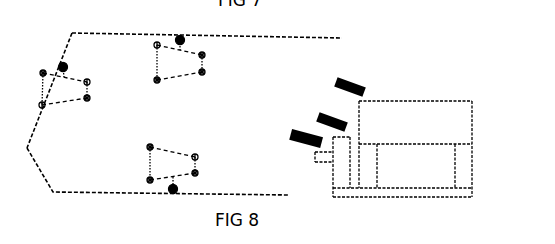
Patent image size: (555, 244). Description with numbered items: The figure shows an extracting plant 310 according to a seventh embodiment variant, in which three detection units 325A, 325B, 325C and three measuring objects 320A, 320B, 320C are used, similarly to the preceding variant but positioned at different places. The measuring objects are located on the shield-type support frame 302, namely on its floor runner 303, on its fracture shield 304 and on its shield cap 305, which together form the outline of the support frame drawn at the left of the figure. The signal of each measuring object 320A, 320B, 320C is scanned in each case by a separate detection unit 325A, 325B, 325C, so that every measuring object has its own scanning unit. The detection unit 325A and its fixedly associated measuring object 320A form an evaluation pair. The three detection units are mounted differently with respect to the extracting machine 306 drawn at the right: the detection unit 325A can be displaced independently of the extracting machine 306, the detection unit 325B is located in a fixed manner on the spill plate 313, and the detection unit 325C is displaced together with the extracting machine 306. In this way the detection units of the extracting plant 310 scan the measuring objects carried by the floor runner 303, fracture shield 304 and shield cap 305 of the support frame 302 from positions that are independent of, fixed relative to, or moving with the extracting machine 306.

The shield-type support frame 302 is at (87, 22).
The floor runner 303 is at (102, 192).
The fracture shield 304 is at (40, 124).
The shield cap 305 is at (268, 40).
The extracting machine 306 is at (433, 95).
The extracting plant 310 is at (363, 37).
The spill plate 313 is at (333, 173).
The measuring object 320A is at (170, 193).
The measuring object 320B is at (62, 65).
The measuring object 320C is at (178, 37).
The detection unit 325A is at (306, 146).
The detection unit 325B is at (350, 134).
The detection unit 325C is at (362, 102).